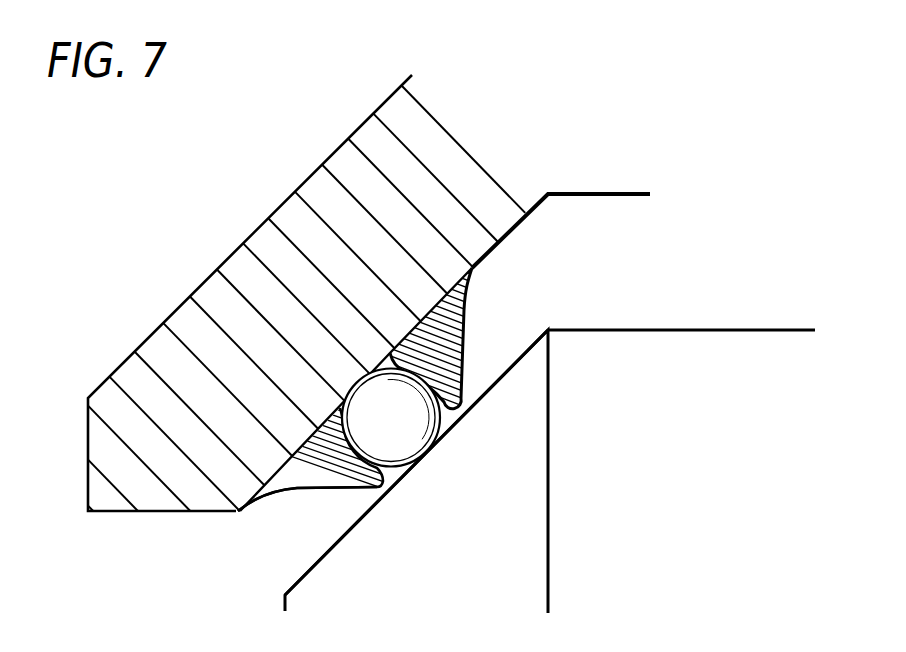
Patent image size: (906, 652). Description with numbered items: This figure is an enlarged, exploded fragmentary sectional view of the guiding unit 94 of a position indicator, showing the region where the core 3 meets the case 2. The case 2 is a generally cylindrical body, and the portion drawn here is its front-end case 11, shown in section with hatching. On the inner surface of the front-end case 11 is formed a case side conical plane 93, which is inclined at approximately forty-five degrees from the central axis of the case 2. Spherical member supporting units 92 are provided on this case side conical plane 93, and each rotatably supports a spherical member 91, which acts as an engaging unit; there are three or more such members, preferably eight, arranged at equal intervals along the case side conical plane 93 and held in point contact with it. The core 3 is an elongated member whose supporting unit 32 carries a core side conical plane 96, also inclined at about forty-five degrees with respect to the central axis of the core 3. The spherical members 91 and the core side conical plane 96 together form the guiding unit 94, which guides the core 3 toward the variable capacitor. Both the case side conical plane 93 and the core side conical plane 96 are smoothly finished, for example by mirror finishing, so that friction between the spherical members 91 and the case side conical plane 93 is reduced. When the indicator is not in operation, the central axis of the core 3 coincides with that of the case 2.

The case 2 is at (369, 326).
The front-end case 11 is at (317, 187).
The case side conical plane 93 is at (514, 233).
The spherical member supporting unit 92 is at (276, 492).
The guiding unit 94 is at (345, 495).
The spherical member 91 is at (403, 457).
The core 3 is at (550, 428).
The supporting unit 32 is at (625, 341).
The core side conical plane 96 is at (527, 365).